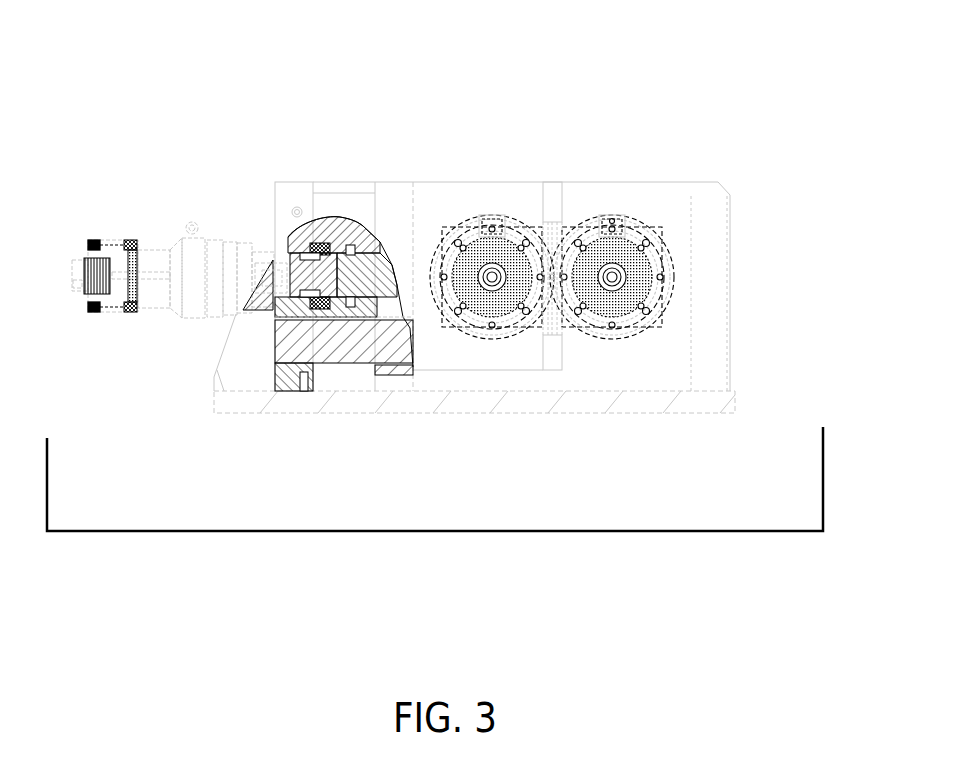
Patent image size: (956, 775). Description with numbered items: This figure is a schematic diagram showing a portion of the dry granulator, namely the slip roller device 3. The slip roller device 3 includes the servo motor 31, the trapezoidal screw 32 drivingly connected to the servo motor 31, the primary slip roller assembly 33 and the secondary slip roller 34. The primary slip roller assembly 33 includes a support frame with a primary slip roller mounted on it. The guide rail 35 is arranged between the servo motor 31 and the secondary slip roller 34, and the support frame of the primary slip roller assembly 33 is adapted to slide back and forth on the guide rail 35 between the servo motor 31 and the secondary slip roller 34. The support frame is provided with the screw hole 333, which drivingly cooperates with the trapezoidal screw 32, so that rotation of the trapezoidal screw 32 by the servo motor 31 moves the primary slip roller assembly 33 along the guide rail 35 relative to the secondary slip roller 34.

The slip roller device 3 is at (595, 567).
The servo motor 31 is at (165, 221).
The trapezoidal screw 32 is at (304, 209).
The primary slip roller assembly 33 is at (430, 174).
The secondary slip roller 34 is at (686, 219).
The guide rail 35 is at (612, 214).
The screw hole 333 is at (281, 390).